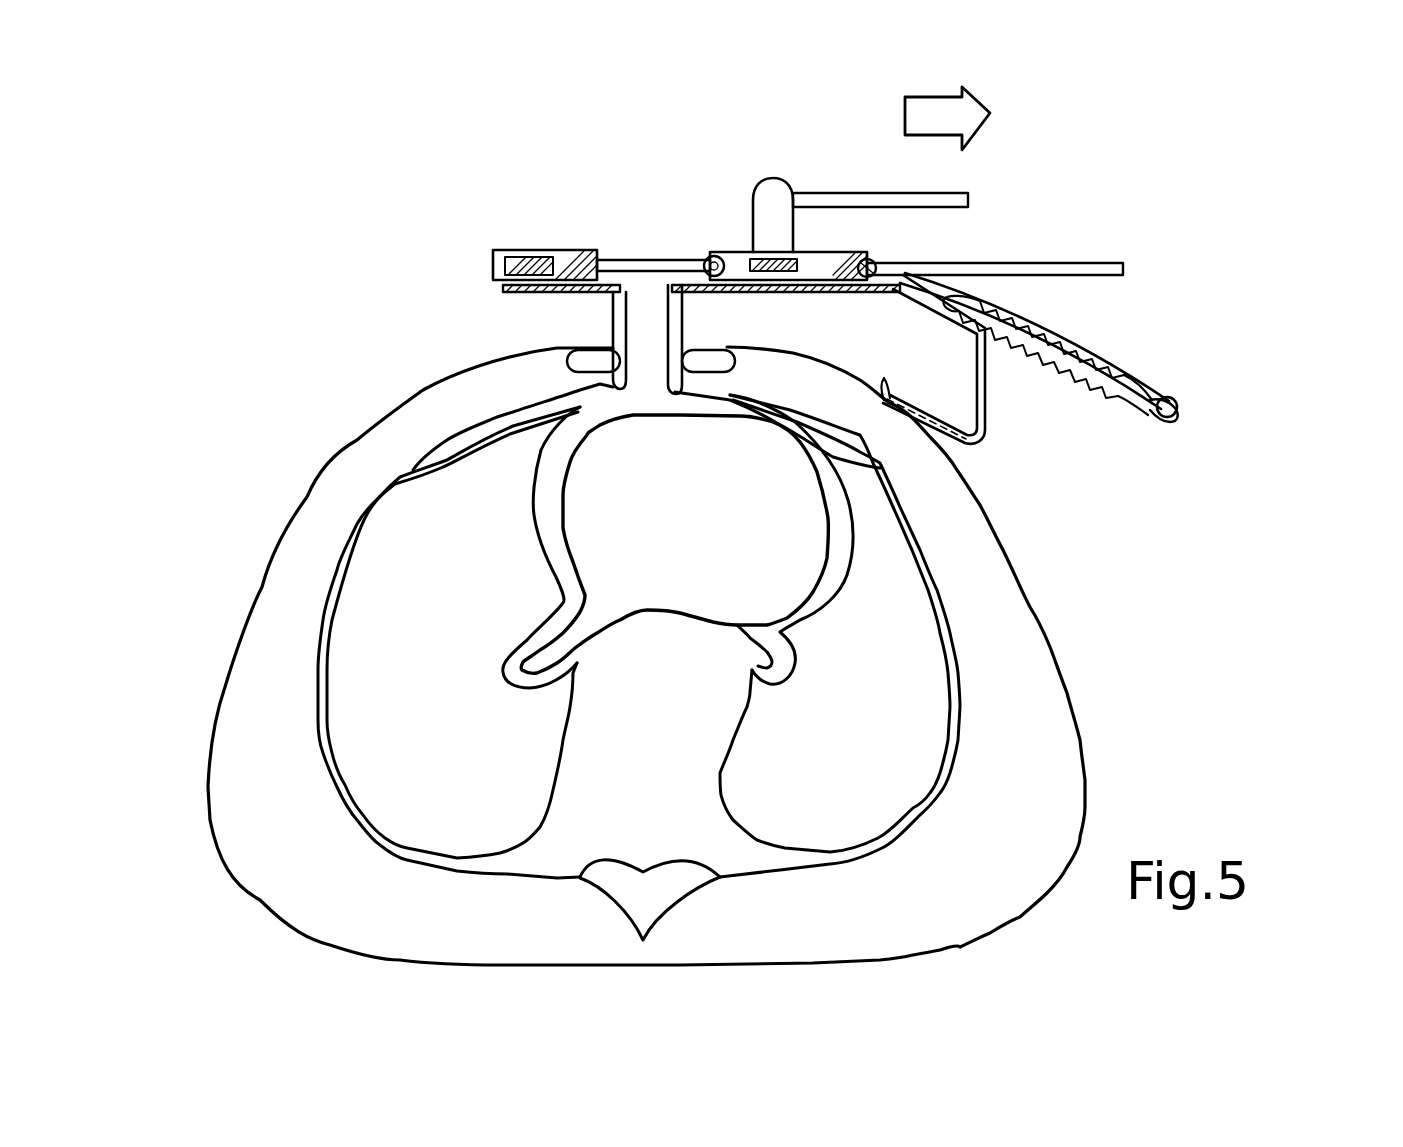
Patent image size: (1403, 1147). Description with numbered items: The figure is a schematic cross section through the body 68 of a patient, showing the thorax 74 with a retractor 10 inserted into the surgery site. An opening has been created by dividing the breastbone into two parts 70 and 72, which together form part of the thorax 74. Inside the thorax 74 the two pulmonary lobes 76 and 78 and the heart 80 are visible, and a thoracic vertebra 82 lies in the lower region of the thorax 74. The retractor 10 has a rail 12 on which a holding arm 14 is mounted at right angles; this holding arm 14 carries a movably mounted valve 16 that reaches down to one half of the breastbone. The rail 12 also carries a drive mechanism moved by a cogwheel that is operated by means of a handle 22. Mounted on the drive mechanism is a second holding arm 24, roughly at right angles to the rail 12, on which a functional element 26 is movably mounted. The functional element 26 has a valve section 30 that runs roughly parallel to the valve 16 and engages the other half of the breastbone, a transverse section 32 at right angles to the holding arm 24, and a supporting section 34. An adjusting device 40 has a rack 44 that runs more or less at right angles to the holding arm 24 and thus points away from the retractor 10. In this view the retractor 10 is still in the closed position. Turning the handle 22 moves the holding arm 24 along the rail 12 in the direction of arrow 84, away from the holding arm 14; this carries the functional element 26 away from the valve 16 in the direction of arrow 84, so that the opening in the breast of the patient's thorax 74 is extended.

The retractor 10 is at (613, 213).
The rail 12 is at (1067, 262).
The holding arm 14 is at (520, 262).
The valve 16 is at (613, 316).
The handle 22 is at (780, 205).
The second holding arm 24 is at (873, 226).
The functional element 26 is at (739, 248).
The valve section 30 is at (662, 313).
The transverse section 32 is at (888, 298).
The supporting section 34 is at (963, 442).
The adjusting device 40 is at (1010, 327).
The rack 44 is at (1085, 365).
The body 68 is at (1035, 611).
The breastbone part 70 is at (565, 357).
The breastbone part 72 is at (700, 360).
The thorax 74 is at (353, 450).
The pulmonary lobe 76 is at (375, 555).
The pulmonary lobe 78 is at (927, 693).
The heart 80 is at (600, 530).
The thoracic vertebra 82 is at (685, 860).
The arrow 84 is at (970, 114).